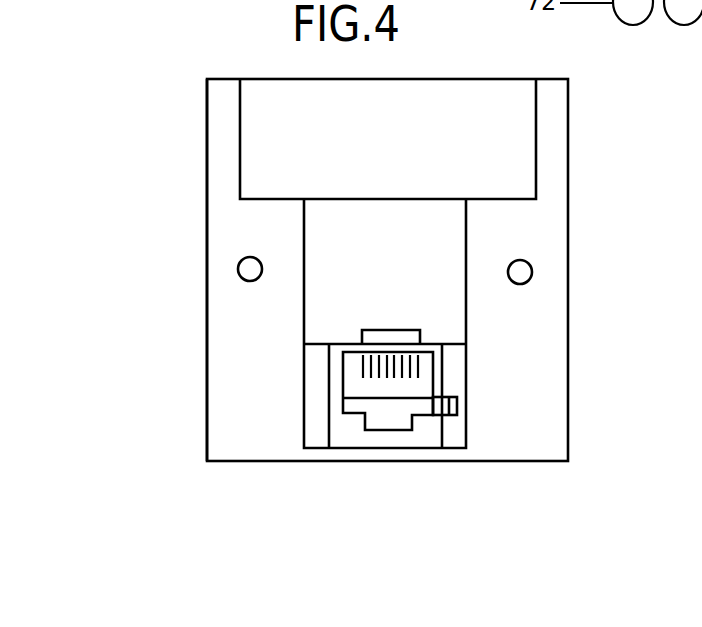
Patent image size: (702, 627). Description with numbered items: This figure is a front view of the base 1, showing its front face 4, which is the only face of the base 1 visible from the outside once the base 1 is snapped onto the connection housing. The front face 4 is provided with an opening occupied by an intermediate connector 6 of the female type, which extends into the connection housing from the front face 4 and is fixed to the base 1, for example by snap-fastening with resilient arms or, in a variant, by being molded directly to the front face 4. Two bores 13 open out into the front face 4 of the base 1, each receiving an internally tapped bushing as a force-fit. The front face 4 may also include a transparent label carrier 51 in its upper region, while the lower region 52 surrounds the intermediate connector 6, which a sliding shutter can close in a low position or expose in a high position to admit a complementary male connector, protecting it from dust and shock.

The base 1 is at (180, 158).
The front face 4 is at (233, 363).
The transparent label carrier 51 is at (510, 130).
The lower panel 52 is at (437, 299).
The intermediate connector 6 is at (394, 407).
The bores 13 is at (238, 267).